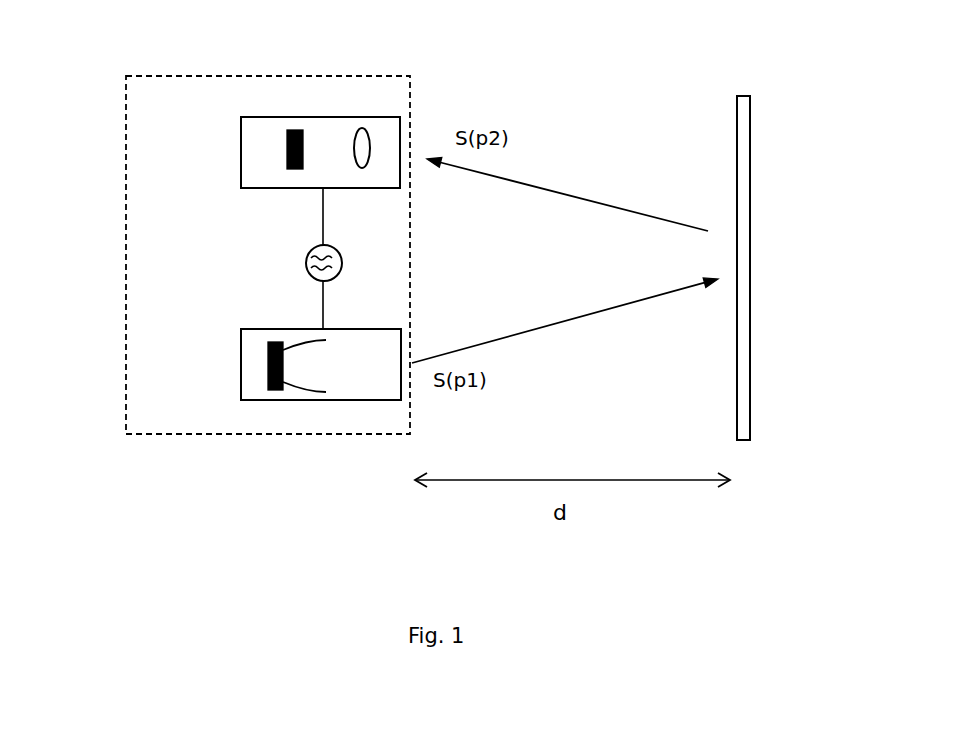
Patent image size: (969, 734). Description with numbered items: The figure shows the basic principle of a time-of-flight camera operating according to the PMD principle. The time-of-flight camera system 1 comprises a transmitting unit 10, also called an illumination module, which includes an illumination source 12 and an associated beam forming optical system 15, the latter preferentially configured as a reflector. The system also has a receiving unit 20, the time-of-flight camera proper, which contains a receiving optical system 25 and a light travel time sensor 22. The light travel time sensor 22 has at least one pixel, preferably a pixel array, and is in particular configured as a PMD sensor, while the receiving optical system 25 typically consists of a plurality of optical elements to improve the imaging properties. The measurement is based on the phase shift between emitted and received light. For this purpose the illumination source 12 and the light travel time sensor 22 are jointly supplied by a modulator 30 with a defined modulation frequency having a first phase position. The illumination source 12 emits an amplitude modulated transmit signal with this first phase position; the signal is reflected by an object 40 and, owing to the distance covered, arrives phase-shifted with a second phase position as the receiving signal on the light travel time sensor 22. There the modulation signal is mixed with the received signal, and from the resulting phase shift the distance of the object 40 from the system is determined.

The time-of-flight camera system 1 is at (90, 92).
The transmitting unit 10 is at (347, 421).
The illumination source 12 is at (264, 367).
The beam forming optical system 15 is at (303, 395).
The receiving unit 20 is at (265, 91).
The light travel time sensor 22 is at (282, 148).
The receiving optical system 25 is at (360, 125).
The modulator 30 is at (306, 271).
The object 40 is at (750, 415).